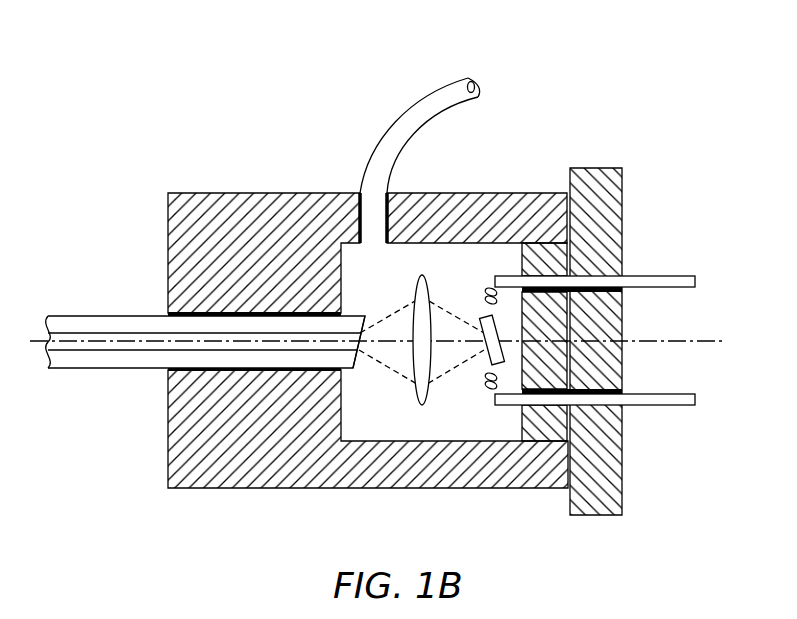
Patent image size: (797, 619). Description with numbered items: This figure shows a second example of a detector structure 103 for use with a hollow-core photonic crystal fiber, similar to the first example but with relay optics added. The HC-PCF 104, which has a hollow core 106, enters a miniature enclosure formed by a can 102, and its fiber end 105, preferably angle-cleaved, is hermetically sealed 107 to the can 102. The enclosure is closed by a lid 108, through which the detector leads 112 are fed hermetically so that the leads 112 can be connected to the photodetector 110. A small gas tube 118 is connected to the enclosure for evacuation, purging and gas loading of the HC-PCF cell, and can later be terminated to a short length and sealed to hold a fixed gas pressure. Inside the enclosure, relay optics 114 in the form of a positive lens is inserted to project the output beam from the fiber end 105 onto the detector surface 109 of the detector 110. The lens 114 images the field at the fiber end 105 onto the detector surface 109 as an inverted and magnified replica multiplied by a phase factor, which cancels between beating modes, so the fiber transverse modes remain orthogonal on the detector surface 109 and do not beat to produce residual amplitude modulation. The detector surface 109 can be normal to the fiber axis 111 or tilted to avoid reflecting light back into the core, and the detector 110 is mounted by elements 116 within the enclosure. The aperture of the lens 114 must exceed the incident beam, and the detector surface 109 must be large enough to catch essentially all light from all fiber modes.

The can 102 is at (210, 193).
The optical assembly 103 is at (572, 91).
The HC-PCF 104 is at (100, 316).
The fiber end 105 is at (360, 358).
The hollow core 106 is at (128, 342).
The hermetic seal 107 is at (205, 313).
The lid 108 is at (617, 202).
The detector surface 109 is at (490, 366).
The photodetector 110 is at (490, 311).
The fiber axis 111 is at (720, 341).
The detector leads 112 is at (667, 277).
The relay optics 114 is at (422, 274).
The spring 116 is at (495, 387).
The gas tube 118 is at (396, 110).